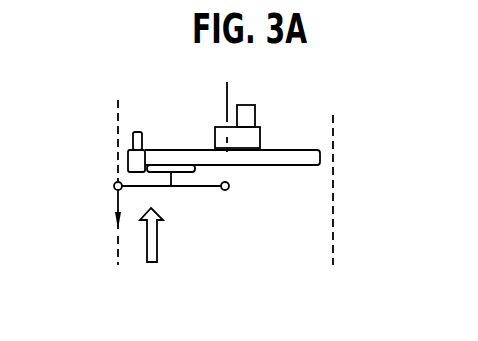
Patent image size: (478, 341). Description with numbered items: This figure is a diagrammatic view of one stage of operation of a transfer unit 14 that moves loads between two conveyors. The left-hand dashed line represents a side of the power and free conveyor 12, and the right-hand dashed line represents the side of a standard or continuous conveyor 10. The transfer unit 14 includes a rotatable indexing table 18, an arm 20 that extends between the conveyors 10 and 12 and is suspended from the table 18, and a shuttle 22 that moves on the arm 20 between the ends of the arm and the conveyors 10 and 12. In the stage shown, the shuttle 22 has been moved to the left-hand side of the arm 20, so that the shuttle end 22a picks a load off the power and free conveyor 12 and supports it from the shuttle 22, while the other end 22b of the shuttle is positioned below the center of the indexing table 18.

The continuous conveyor 10 is at (341, 141).
The power and free conveyor 12 is at (109, 240).
The transfer unit 14 is at (275, 116).
The rotatable indexing table 18 is at (215, 127).
The arm 20 is at (305, 166).
The shuttle 22 is at (193, 189).
The shuttle end 22a is at (114, 189).
The other end of the shuttle 22b is at (228, 191).